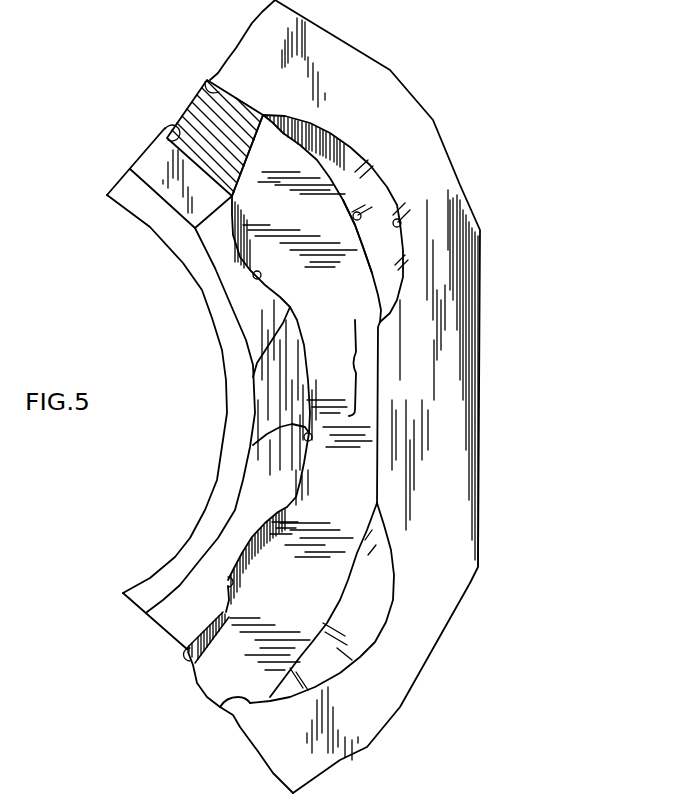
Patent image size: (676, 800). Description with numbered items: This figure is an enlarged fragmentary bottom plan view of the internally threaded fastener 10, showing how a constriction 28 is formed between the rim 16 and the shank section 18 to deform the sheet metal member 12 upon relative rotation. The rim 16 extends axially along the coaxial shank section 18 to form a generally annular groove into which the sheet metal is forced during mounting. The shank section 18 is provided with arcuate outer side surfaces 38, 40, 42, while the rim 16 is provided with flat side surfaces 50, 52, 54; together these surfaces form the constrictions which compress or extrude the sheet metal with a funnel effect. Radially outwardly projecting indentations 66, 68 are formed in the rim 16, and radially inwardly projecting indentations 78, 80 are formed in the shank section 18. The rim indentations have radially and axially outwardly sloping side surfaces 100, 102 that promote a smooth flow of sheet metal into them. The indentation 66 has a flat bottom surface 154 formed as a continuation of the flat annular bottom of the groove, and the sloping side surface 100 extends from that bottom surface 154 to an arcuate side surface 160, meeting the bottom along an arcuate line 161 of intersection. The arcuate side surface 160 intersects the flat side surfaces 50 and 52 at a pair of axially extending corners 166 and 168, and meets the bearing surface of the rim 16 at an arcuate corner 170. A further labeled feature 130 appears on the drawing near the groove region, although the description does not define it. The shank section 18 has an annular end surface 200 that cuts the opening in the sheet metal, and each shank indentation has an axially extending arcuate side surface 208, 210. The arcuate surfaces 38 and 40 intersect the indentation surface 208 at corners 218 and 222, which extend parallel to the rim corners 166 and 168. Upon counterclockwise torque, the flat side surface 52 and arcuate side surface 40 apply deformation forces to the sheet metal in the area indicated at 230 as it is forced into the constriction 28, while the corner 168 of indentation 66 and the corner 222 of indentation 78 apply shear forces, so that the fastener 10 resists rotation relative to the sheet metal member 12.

The internally threaded fastener 10 is at (421, 97).
The sheet metal member 12 is at (213, 131).
The rim 16 is at (485, 350).
The shank section 18 is at (205, 426).
The constriction 28 is at (368, 443).
The arcuate outer side surface 38 is at (165, 128).
The arcuate outer side surface 40 is at (243, 447).
The arcuate outer side surface 42 is at (186, 659).
The flat side surface 50 is at (210, 88).
The flat side surface 52 is at (368, 477).
The flat side surface 54 is at (220, 707).
The indentation 66 is at (388, 195).
The indentation 68 is at (372, 594).
The shank indentation 78 is at (253, 275).
The shank indentation 80 is at (245, 543).
The sloping side surface 100 is at (394, 255).
The sloping side surface 102 is at (348, 627).
The side face 130 is at (237, 397).
The flat bottom surface 154 is at (358, 180).
The arcuate side surface 160 is at (402, 228).
The arcuate line of intersection 161 is at (355, 218).
The axially extending corner 166 is at (263, 117).
The axially extending corner 168 is at (381, 326).
The arcuate corner 170 is at (385, 193).
The annular end surface 200 is at (190, 620).
The arcuate side surface 208 is at (253, 281).
The arcuate side surface 210 is at (226, 576).
The corner 218 is at (244, 246).
The corner 222 is at (243, 377).
The area of sheet metal 230 is at (357, 364).